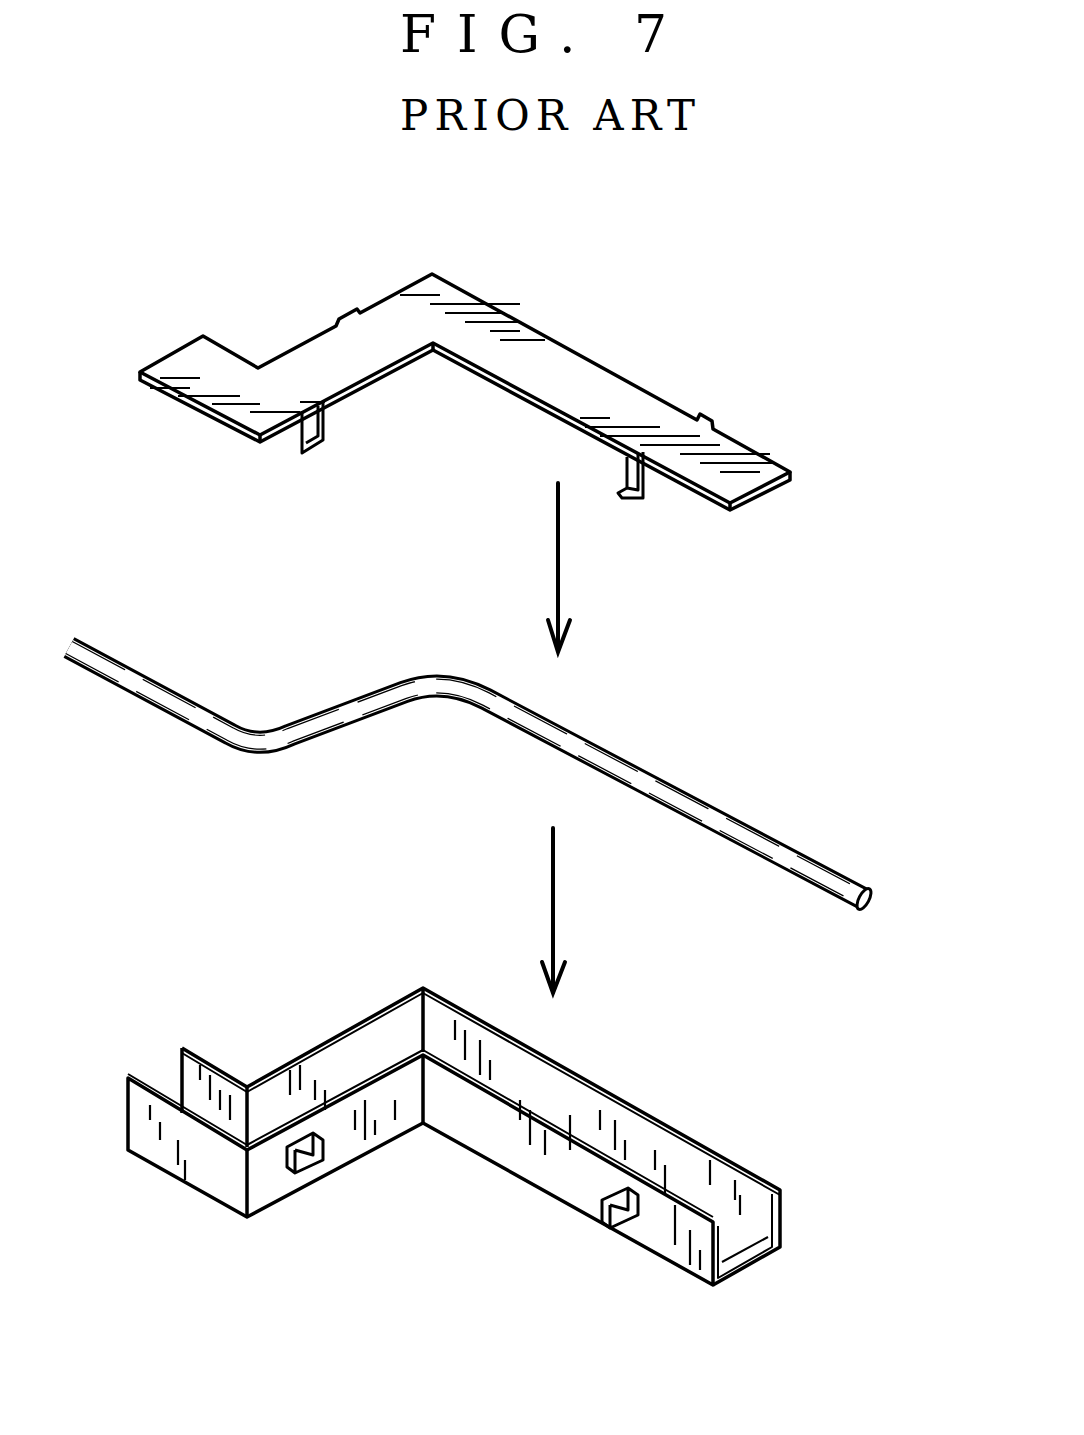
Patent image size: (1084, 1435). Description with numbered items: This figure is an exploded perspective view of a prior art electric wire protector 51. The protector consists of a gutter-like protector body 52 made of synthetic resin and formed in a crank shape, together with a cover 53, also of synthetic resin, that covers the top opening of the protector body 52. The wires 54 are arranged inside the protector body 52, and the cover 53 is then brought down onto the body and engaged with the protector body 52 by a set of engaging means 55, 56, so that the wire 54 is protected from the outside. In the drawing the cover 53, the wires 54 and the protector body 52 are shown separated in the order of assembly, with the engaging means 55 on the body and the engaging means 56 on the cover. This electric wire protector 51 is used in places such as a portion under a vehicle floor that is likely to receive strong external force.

The electric wire protector 51 is at (510, 794).
The protector body 52 is at (454, 1152).
The cover 53 is at (465, 439).
The wires 54 is at (727, 807).
The engaging means 55 is at (613, 1215).
The engaging means 56 is at (633, 497).